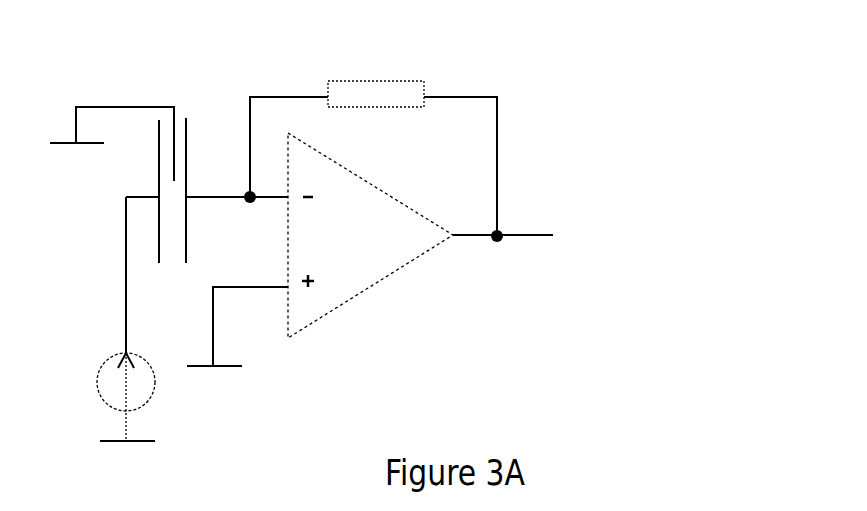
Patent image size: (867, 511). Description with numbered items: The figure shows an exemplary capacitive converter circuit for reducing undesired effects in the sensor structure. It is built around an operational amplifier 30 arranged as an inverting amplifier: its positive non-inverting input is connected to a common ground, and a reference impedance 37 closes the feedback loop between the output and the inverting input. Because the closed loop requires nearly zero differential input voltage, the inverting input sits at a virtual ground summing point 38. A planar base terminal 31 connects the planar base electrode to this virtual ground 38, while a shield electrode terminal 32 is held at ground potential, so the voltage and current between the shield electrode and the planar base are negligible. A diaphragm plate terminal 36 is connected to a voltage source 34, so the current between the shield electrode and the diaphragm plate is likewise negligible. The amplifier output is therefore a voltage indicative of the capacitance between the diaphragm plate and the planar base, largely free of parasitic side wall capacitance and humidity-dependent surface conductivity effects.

The operational amplifier 30 is at (401, 200).
The planar base terminal 31 is at (188, 130).
The shield electrode terminal 32 is at (175, 103).
The voltage source 34 is at (97, 378).
The diaphragm plate terminal 36 is at (157, 166).
The reference impedance 37 is at (376, 85).
The virtual ground summing point 38 is at (248, 203).